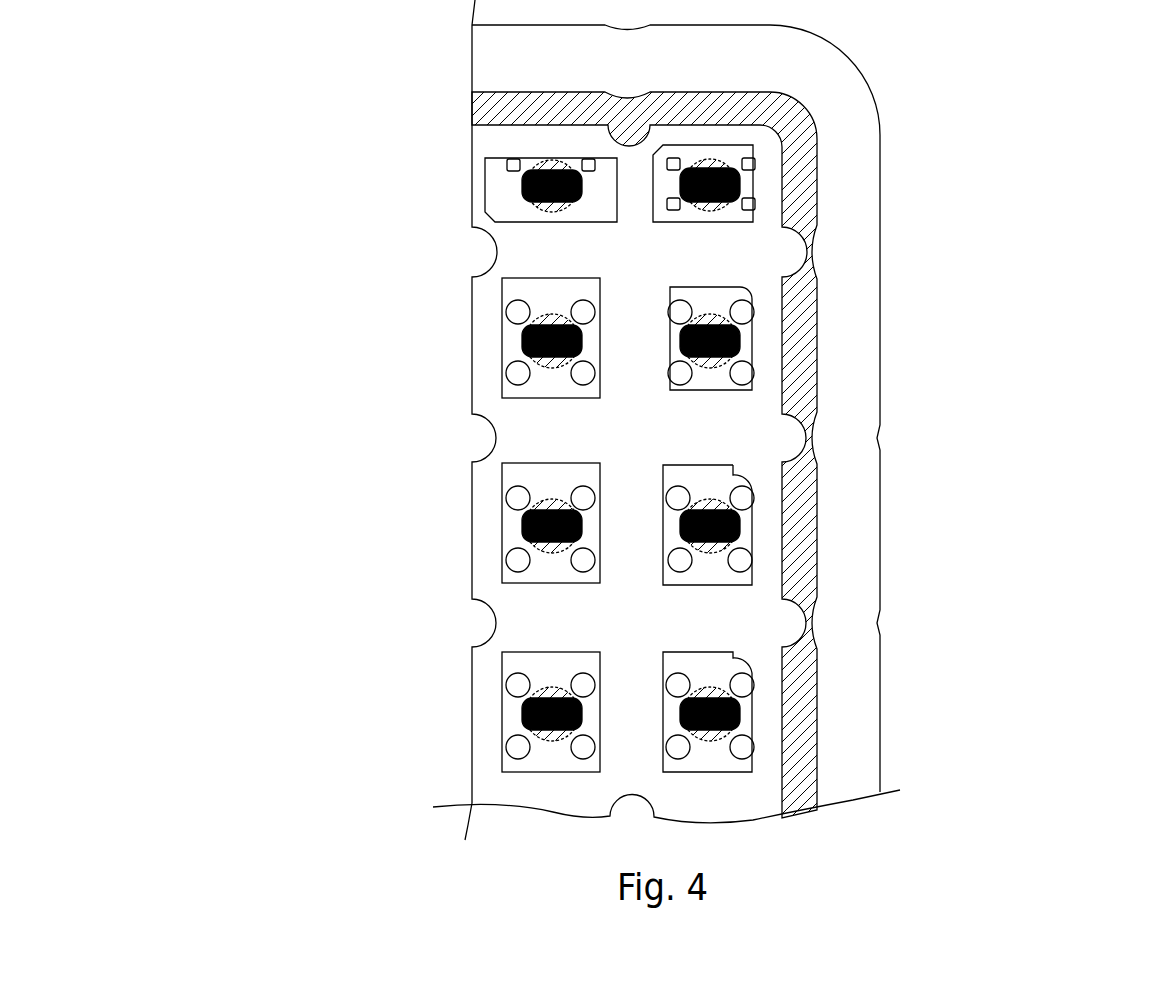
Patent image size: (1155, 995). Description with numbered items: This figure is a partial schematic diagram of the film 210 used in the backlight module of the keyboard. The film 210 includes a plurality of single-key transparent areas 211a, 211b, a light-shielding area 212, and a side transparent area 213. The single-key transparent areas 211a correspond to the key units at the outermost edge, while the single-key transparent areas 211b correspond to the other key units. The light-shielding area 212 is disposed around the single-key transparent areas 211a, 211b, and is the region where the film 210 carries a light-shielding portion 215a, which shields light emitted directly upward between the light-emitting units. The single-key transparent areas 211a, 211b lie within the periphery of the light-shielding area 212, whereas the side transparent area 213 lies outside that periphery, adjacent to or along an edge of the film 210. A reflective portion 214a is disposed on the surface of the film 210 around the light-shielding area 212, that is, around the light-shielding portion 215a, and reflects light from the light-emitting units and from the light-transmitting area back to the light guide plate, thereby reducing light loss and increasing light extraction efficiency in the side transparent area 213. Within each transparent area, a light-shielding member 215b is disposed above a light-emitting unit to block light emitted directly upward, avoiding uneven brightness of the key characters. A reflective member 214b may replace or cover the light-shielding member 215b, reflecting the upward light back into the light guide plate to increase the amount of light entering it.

The film 210 is at (1128, 58).
The light-shielding area 212 is at (358, 420).
The light-shielding portion 215a is at (512, 249).
The reflective portion 214a is at (795, 269).
The reflective member 214b is at (720, 492).
The single-key transparent area 211a is at (700, 475).
The single-key transparent area 211b is at (532, 478).
The light-shielding member 215b is at (740, 522).
The side transparent area 213 is at (858, 568).